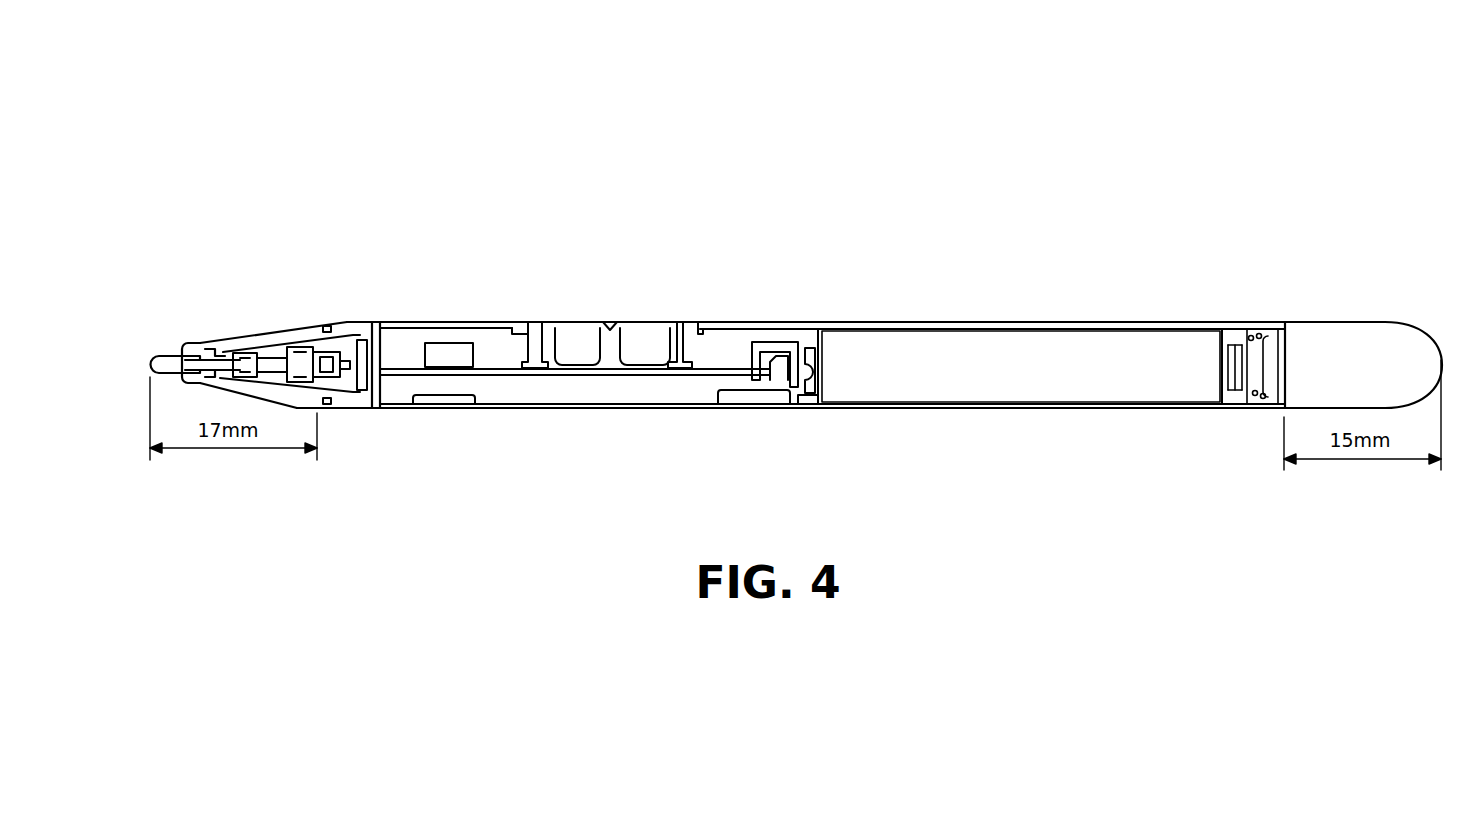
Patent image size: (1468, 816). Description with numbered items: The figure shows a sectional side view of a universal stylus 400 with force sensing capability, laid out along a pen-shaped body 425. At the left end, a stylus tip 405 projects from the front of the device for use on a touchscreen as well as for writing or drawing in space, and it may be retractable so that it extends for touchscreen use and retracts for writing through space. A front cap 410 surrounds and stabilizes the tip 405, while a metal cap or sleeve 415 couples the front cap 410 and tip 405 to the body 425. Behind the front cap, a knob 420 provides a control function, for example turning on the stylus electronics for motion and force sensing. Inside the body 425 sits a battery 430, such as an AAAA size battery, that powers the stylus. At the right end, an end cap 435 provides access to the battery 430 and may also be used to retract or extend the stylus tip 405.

The stylus 400 is at (299, 100).
The stylus tip 405 is at (160, 386).
The front cap 410 is at (185, 338).
The metal cap or sleeve 415 is at (283, 330).
The knob 420 is at (588, 315).
The body 425 is at (792, 315).
The battery 430 is at (1017, 362).
The end cap 435 is at (1324, 347).